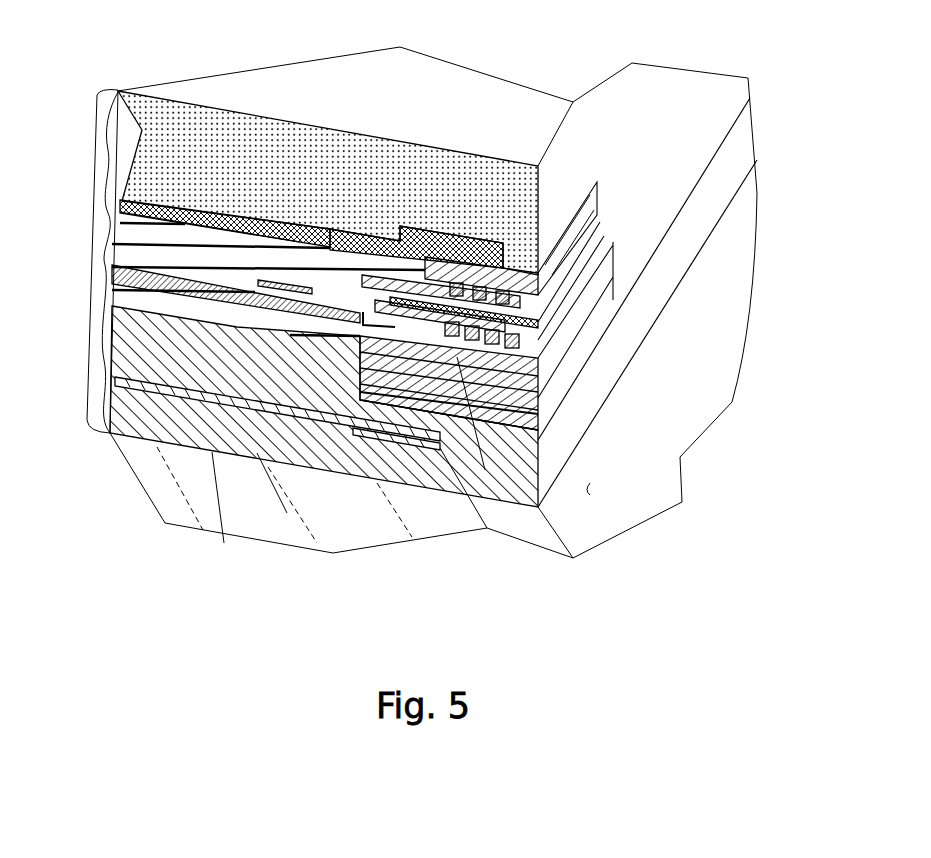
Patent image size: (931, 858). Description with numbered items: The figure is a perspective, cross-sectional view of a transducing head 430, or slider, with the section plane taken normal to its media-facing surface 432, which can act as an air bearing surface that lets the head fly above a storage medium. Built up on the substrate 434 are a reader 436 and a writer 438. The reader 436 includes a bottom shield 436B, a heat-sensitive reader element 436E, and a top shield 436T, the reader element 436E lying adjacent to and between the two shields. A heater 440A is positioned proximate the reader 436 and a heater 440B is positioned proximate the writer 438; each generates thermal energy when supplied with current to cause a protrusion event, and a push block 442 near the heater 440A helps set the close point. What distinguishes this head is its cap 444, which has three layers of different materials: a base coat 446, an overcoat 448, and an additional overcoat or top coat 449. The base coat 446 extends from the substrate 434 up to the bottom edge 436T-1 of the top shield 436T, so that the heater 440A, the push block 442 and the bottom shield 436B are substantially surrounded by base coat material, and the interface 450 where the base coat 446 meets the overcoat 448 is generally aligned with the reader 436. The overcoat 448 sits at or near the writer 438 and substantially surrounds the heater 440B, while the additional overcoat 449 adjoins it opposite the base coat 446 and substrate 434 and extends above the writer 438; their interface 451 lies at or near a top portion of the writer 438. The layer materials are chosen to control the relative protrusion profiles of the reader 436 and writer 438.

The transducing head 430 is at (547, 74).
The media-facing surface 432 is at (590, 495).
The substrate 434 is at (287, 513).
The reader 436 is at (552, 392).
The top shield 436T is at (545, 358).
The reader element 436E is at (548, 372).
The bottom shield 436B is at (543, 418).
The bottom edge of the top shield 436T-1 is at (485, 470).
The writer 438 is at (562, 288).
The heater 440A is at (368, 442).
The heater 440B is at (290, 285).
The push block 442 is at (224, 543).
The cap 444 is at (105, 265).
The base coat 446 is at (105, 365).
The overcoat 448 is at (108, 255).
The additional overcoat 449 is at (110, 154).
The interface 450 is at (167, 523).
The interface 451 is at (212, 452).